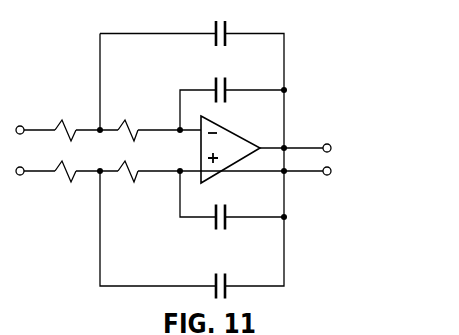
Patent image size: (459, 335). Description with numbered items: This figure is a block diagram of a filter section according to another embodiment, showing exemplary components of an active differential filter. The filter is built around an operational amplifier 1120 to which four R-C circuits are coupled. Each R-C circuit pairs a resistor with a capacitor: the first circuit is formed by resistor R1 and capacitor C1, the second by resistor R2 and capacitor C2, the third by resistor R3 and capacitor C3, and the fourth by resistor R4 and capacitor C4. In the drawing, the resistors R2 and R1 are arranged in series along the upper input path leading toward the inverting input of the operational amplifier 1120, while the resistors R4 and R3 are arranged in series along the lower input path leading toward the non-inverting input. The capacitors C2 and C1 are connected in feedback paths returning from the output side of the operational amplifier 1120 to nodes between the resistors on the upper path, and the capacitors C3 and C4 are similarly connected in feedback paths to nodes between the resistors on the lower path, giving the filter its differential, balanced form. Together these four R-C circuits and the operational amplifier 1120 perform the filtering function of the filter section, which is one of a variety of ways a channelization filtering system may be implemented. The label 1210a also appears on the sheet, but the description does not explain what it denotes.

The resistor R1 is at (127, 119).
The resistor R2 is at (63, 119).
The resistor R3 is at (127, 184).
The resistor R4 is at (63, 184).
The capacitor C1 is at (236, 86).
The capacitor C2 is at (236, 26).
The capacitor C3 is at (236, 213).
The capacitor C4 is at (236, 281).
The operational amplifier 1120 is at (248, 130).
The filter circuit 1210a is at (33, 334).